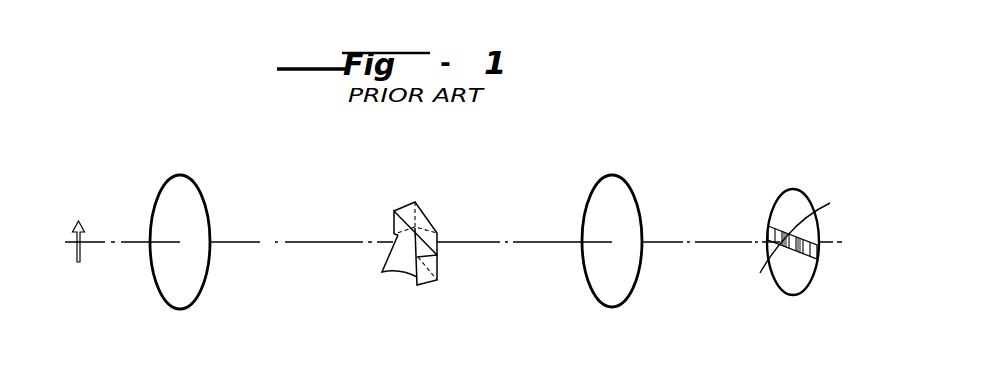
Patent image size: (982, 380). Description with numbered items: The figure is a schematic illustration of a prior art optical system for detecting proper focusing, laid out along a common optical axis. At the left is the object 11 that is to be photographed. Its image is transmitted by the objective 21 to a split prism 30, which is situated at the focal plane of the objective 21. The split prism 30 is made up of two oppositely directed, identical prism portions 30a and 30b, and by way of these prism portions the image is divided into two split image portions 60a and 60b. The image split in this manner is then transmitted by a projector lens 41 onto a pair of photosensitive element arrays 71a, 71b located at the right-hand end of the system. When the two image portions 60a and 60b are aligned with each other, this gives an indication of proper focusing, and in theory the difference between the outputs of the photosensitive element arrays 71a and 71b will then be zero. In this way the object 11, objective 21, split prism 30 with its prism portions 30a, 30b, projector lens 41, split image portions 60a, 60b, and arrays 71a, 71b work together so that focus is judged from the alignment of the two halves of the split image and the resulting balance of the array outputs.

The object 11 is at (80, 259).
The objective 21 is at (197, 293).
The split prism 30 is at (385, 268).
The prism portion 30a is at (416, 203).
The prism portion 30b is at (437, 281).
The projector lens 41 is at (628, 293).
The split image portion 60a is at (786, 237).
The split image portion 60b is at (786, 237).
The photosensitive element array 71a is at (828, 210).
The photosensitive element array 71b is at (760, 269).